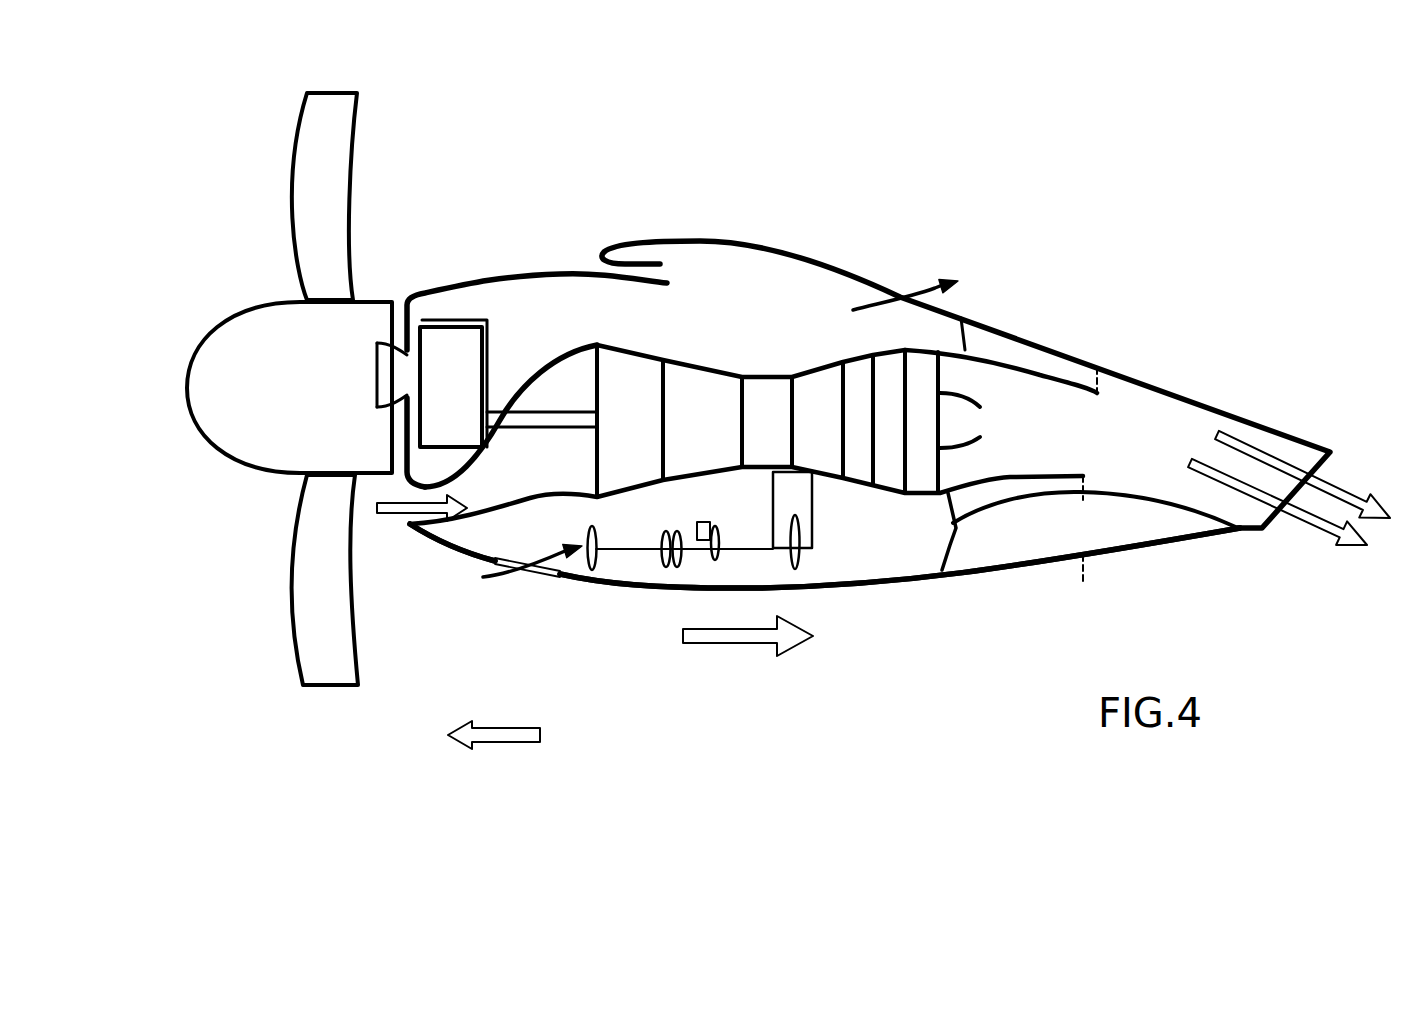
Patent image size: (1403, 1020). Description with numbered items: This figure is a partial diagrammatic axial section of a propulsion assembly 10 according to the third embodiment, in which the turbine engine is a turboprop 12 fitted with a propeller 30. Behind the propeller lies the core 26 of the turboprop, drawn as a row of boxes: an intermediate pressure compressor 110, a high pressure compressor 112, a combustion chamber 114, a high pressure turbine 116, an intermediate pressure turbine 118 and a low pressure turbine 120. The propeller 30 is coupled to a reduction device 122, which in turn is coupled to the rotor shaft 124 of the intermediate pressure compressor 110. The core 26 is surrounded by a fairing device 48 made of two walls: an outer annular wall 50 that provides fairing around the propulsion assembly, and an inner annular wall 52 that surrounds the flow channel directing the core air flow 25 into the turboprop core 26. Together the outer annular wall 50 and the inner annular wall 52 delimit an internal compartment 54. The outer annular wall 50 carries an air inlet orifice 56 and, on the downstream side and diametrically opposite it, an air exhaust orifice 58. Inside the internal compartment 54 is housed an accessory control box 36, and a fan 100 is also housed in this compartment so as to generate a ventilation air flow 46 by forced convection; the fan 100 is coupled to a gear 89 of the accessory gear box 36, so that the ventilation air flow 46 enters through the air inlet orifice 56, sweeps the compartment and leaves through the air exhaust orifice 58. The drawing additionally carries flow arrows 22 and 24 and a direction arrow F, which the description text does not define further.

The propulsion assembly 10 is at (542, 157).
The turboprop 12 is at (176, 389).
The propeller 30 is at (262, 185).
The reduction device 122 is at (482, 353).
The rotor shaft 124 is at (533, 427).
The fairing device 48 is at (562, 262).
The inner annular wall 52 is at (677, 355).
The core 26 is at (712, 350).
The internal compartment 54 is at (782, 280).
The intermediate pressure compressor 110 is at (606, 467).
The high pressure compressor 112 is at (681, 450).
The combustion chamber 114 is at (772, 390).
The high pressure turbine 116 is at (795, 448).
The intermediate pressure turbine 118 is at (857, 373).
The air exhaust orifice 58 is at (897, 297).
The ventilation air flow 46 is at (930, 300).
The exhaust flow 24 is at (1340, 480).
The core air flow 25 is at (400, 514).
The outer annular wall 50 is at (440, 548).
The air inlet orifice 56 is at (543, 572).
The fan 100 is at (572, 536).
The gear 89 is at (800, 522).
The accessory control box 36 is at (826, 505).
The low pressure turbine 120 is at (893, 478).
The core airflow direction 22 is at (717, 637).
The forward direction F is at (497, 735).